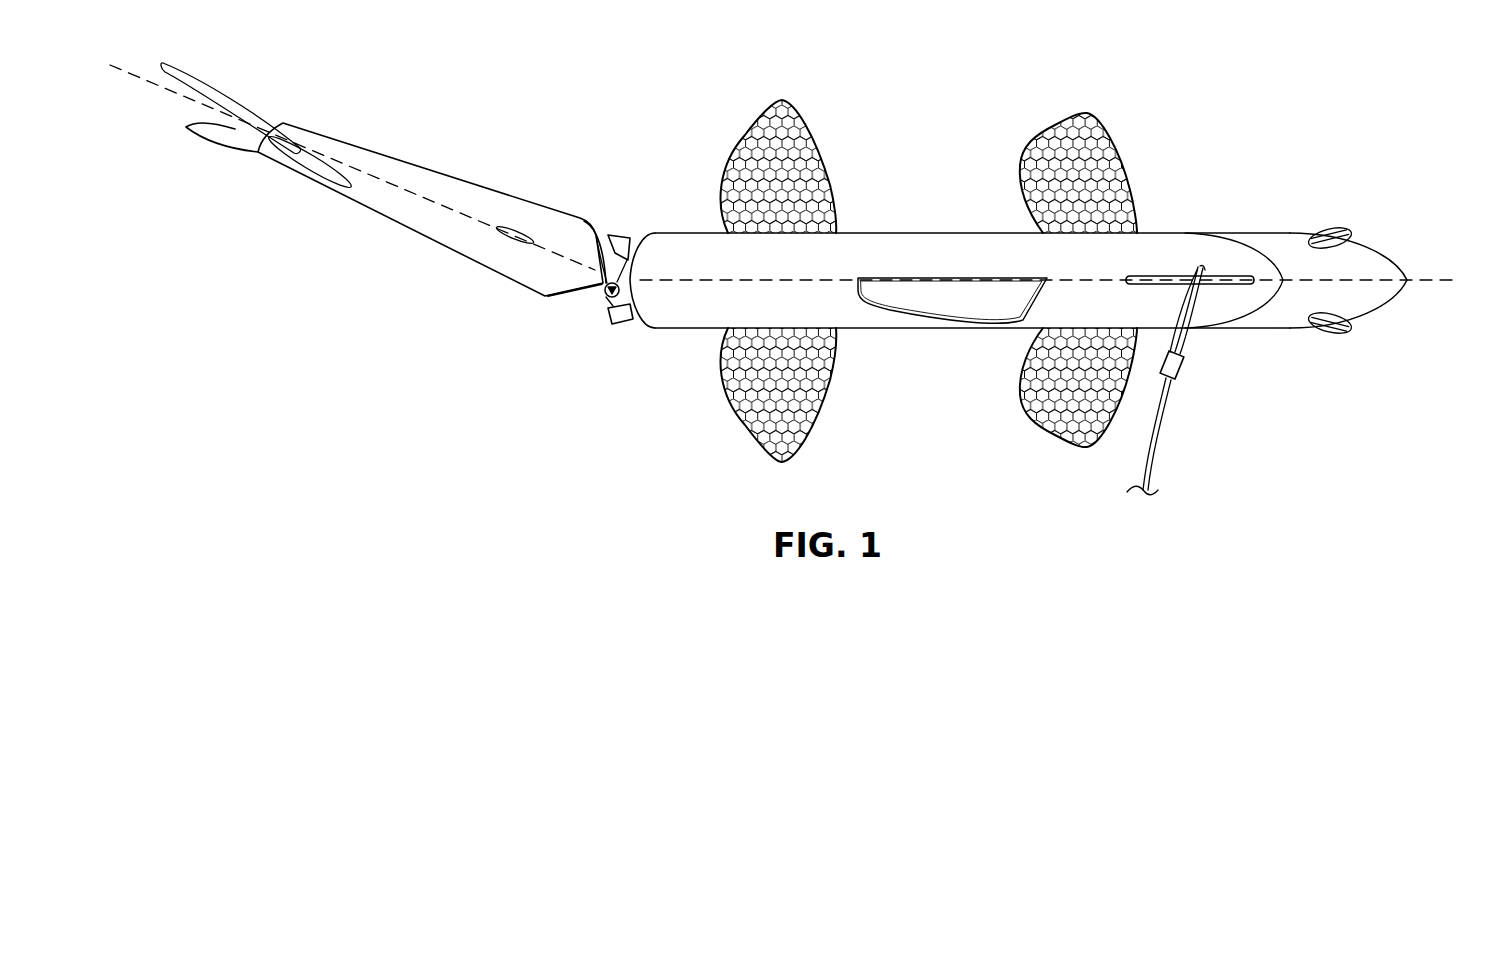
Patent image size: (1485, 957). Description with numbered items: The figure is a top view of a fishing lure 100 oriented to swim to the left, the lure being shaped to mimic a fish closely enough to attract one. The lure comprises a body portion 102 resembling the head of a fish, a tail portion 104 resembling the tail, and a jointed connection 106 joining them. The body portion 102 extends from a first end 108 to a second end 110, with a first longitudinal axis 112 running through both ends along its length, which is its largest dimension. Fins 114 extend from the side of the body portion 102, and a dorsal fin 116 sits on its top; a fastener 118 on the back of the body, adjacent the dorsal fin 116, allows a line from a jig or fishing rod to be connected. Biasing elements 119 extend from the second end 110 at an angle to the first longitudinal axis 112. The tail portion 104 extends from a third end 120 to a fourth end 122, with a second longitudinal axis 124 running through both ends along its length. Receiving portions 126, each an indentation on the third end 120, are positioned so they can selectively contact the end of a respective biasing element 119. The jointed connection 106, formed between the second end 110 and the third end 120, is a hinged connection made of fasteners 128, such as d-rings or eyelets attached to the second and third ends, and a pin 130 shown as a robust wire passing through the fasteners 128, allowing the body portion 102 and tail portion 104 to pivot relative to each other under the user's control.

The fishing lure 100 is at (1250, 190).
The body portion 102 is at (1278, 317).
The tail portion 104 is at (448, 242).
The jointed connection 106 is at (582, 298).
The first end 108 is at (1408, 273).
The second end 110 is at (628, 249).
The first longitudinal axis 112 is at (1415, 280).
The fins 114 is at (787, 153).
The dorsal fin 116 is at (928, 290).
The fastener 118 is at (1200, 268).
The biasing elements 119 is at (632, 319).
The third end 120 is at (602, 240).
The fourth end 122 is at (236, 147).
The second longitudinal axis 124 is at (144, 75).
The receiving portion 126 is at (585, 302).
The fasteners 128 is at (604, 295).
The pin 130 is at (601, 256).